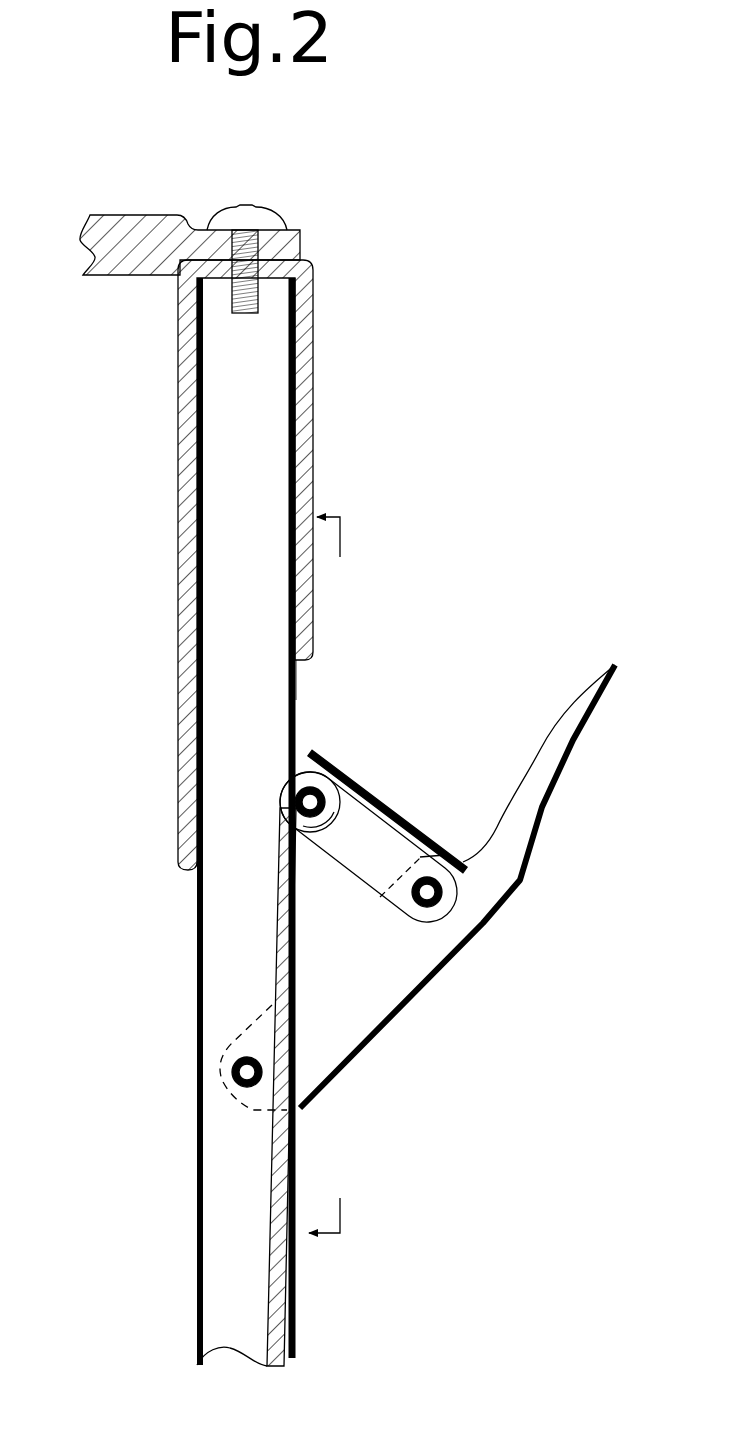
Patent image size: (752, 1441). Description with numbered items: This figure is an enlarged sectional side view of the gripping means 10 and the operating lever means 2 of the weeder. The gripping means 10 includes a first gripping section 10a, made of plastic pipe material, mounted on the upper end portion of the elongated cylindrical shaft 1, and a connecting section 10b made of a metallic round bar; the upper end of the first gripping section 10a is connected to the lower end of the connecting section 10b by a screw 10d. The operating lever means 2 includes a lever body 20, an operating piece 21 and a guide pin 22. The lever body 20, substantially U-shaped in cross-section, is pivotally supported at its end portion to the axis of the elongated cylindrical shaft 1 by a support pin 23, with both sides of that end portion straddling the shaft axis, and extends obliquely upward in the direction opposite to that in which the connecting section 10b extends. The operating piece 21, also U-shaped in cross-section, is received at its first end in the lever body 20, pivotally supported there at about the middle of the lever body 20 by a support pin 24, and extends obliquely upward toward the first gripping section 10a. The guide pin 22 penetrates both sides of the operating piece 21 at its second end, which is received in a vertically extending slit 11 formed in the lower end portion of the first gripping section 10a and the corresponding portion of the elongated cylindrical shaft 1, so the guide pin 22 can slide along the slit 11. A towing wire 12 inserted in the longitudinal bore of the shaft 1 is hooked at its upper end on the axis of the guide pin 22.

The elongated cylindrical shaft 1 is at (193, 942).
The operating lever means 2 is at (465, 967).
The gripping means 10 is at (127, 196).
The first gripping section 10a is at (313, 403).
The connecting section 10b is at (113, 265).
The screw 10d is at (270, 213).
The vertically extending slit 11 is at (294, 695).
The towing wire 12 is at (270, 1262).
The lever body 20 is at (377, 1037).
The operating piece 21 is at (420, 822).
The guide pin 22 is at (332, 770).
The support pin 23 is at (234, 1060).
The support pin 24 is at (443, 897).